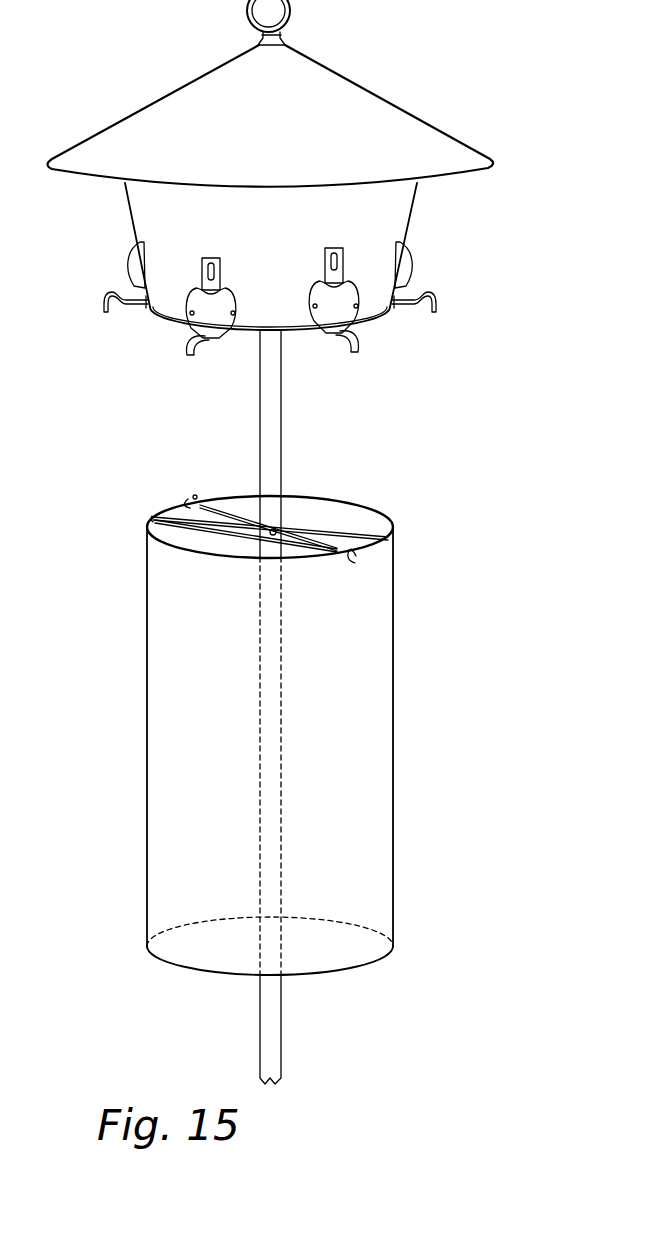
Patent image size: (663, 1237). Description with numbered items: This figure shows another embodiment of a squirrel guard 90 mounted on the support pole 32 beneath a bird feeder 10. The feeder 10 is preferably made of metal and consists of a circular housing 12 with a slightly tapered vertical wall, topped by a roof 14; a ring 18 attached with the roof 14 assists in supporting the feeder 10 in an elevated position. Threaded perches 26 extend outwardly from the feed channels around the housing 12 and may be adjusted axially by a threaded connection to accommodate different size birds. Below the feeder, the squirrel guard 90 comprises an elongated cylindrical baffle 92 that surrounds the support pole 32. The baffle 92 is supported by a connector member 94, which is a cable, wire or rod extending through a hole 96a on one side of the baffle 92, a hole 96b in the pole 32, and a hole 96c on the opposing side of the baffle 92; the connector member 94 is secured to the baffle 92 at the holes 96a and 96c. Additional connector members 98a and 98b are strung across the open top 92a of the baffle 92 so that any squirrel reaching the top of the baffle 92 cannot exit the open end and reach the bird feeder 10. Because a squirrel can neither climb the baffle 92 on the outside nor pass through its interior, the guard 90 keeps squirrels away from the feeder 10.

The feeder 10 is at (470, 72).
The circular housing 12 is at (284, 236).
The roof 14 is at (367, 88).
The ring 18 is at (291, 9).
The threaded perch 26 is at (430, 287).
The support pole 32 is at (283, 422).
The squirrel guard 90 is at (144, 831).
The elongated cylindrical baffle 92 is at (224, 680).
The open top 92a is at (245, 498).
The connector member 94 is at (153, 518).
The hole 96a is at (353, 560).
The hole 96b is at (277, 530).
The hole 96c is at (200, 507).
The additional connector member 98a is at (220, 532).
The additional connector member 98b is at (347, 527).